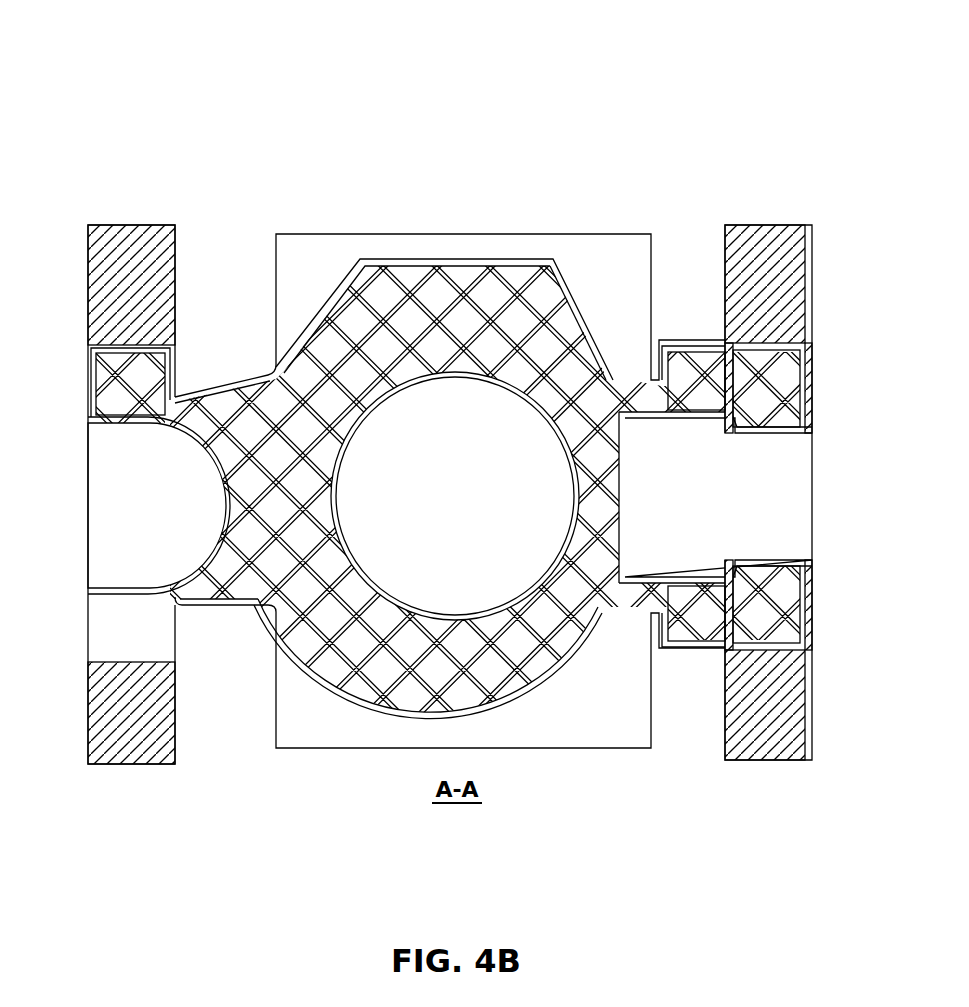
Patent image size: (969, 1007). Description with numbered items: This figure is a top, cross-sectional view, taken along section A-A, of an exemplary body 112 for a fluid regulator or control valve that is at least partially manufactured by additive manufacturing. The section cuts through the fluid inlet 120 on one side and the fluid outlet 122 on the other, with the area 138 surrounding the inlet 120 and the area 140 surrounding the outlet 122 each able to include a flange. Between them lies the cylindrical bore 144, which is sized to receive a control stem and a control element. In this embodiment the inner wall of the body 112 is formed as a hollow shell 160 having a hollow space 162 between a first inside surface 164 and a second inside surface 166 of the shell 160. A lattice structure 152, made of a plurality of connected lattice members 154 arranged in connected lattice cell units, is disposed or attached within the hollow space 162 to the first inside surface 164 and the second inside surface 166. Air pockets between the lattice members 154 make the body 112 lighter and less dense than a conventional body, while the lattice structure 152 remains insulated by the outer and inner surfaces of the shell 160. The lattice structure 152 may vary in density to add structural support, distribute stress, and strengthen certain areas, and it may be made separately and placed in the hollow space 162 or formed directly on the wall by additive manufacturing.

The body 112 is at (103, 157).
The fluid inlet 120 is at (88, 500).
The fluid outlet 122 is at (813, 522).
The area surrounding the fluid inlet 138 is at (276, 801).
The area surrounding the fluid outlet 140 is at (655, 776).
The cylindrical bore 144 is at (334, 499).
The lattice structure 152 is at (377, 680).
The lattice members 154 is at (540, 673).
The hollow shell 160 is at (378, 250).
The hollow space 162 is at (492, 294).
The first inside surface 164 is at (577, 322).
The second inside surface 166 is at (481, 353).